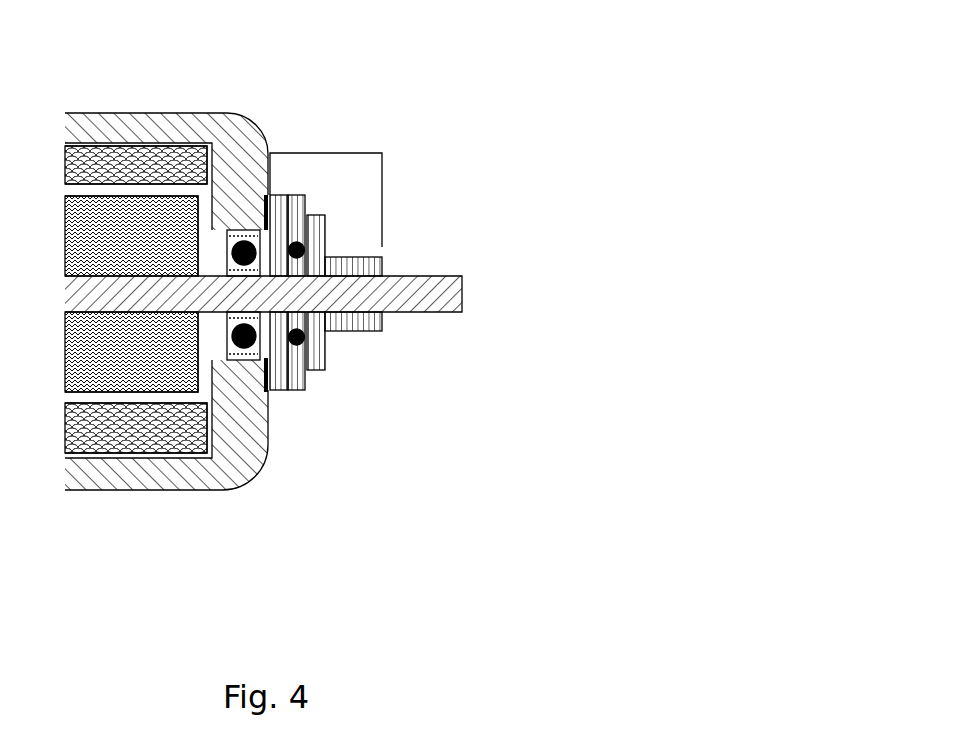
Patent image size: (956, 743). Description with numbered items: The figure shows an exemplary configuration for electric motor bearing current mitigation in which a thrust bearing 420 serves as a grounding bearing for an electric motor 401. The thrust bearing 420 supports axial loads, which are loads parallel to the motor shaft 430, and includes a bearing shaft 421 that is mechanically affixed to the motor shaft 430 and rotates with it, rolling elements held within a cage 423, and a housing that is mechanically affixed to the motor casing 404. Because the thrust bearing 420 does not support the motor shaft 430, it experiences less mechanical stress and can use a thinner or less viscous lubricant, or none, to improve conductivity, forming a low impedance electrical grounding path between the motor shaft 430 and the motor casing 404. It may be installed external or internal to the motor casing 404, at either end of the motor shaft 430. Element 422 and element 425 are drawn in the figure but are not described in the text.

The electric motor 401 is at (102, 94).
The motor casing 404 is at (83, 504).
The thrust bearing 420 is at (322, 153).
The bearing shaft 421 is at (372, 337).
The seal 422 is at (307, 385).
The cage 423 is at (281, 404).
The bearing 425 is at (239, 370).
The motor shaft 430 is at (464, 289).